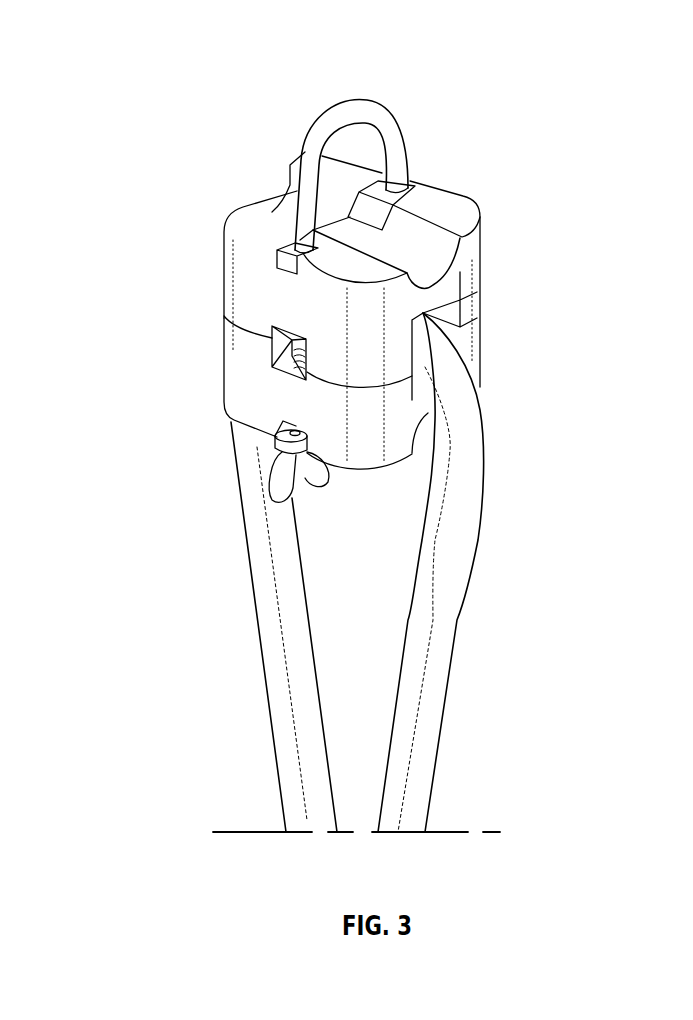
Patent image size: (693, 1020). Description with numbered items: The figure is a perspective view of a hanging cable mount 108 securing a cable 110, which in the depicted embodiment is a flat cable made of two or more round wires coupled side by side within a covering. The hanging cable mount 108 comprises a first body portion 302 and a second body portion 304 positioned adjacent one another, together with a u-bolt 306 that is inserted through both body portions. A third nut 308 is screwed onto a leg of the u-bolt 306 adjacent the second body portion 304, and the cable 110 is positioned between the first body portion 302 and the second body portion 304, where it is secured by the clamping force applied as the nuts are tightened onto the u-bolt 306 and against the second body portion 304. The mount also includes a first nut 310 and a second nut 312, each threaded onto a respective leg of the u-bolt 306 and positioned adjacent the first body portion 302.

The hanging cable mount 108 is at (539, 83).
The cable 110 is at (460, 497).
The first body portion 302 is at (462, 275).
The second body portion 304 is at (262, 387).
The u-bolt 306 is at (347, 123).
The third nut 308 is at (297, 467).
The first nut 310 is at (277, 267).
The second nut 312 is at (410, 182).